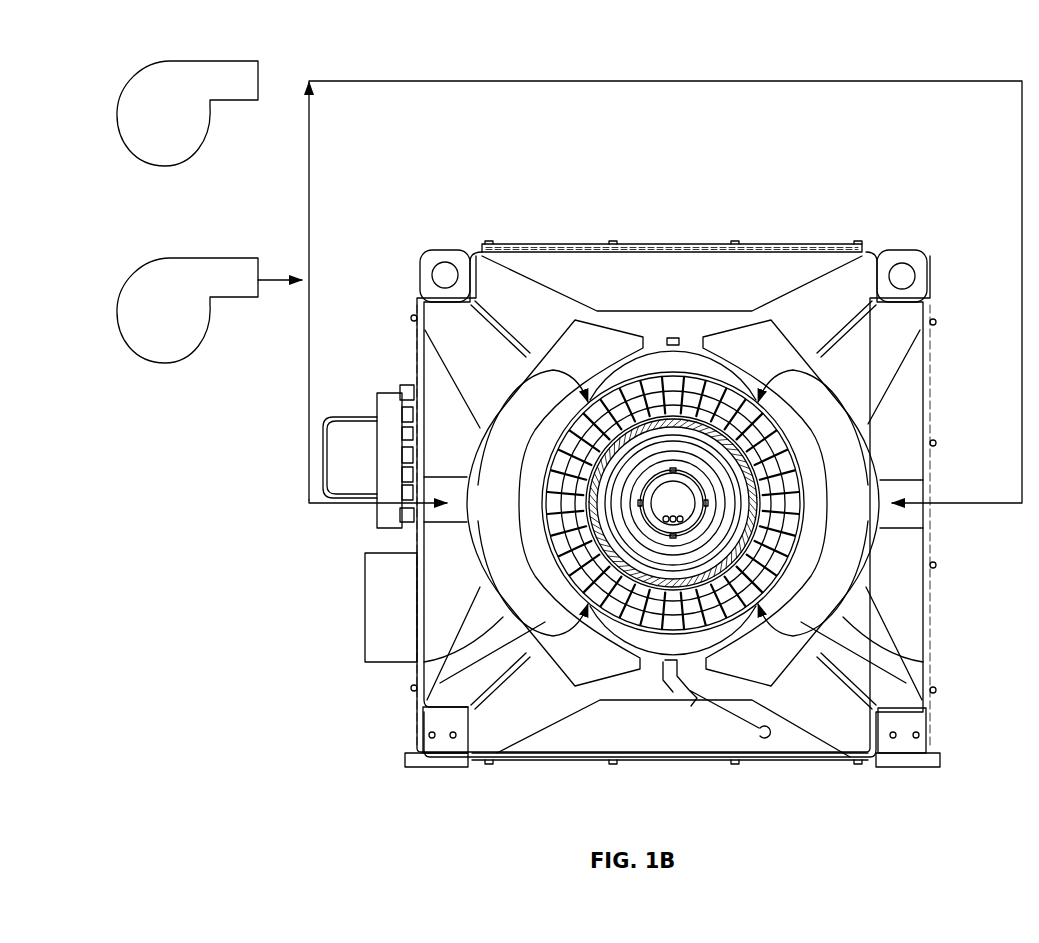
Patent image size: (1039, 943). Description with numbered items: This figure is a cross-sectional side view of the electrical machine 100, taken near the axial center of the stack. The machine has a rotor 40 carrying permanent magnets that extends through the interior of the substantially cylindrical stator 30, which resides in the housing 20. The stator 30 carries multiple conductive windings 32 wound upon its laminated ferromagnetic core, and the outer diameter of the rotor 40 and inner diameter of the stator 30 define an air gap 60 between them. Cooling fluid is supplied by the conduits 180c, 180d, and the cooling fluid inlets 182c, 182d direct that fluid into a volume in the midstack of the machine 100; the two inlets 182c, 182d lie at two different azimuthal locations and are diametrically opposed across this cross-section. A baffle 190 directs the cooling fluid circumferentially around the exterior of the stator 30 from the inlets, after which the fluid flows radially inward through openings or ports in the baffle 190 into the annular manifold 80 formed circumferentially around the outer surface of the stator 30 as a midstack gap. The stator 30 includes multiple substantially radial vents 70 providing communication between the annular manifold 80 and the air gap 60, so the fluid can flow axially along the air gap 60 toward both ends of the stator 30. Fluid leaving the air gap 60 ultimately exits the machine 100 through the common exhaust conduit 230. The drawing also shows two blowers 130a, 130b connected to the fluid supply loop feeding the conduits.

The housing 20 is at (562, 245).
The stator 30 is at (630, 617).
The conductive windings 32 is at (700, 600).
The rotor 40 is at (580, 600).
The air gap 60 is at (661, 584).
The vents 70 is at (700, 385).
The annular manifold 80 is at (633, 362).
The electrical machine 100 is at (243, 668).
The blower 130a is at (184, 258).
The blower 130b is at (184, 61).
The conduit 180c is at (430, 521).
The conduit 180d is at (917, 492).
The cooling fluid inlet 182c is at (422, 548).
The cooling fluid inlet 182d is at (883, 512).
The baffle 190 is at (425, 700).
The common exhaust conduit 230 is at (366, 612).